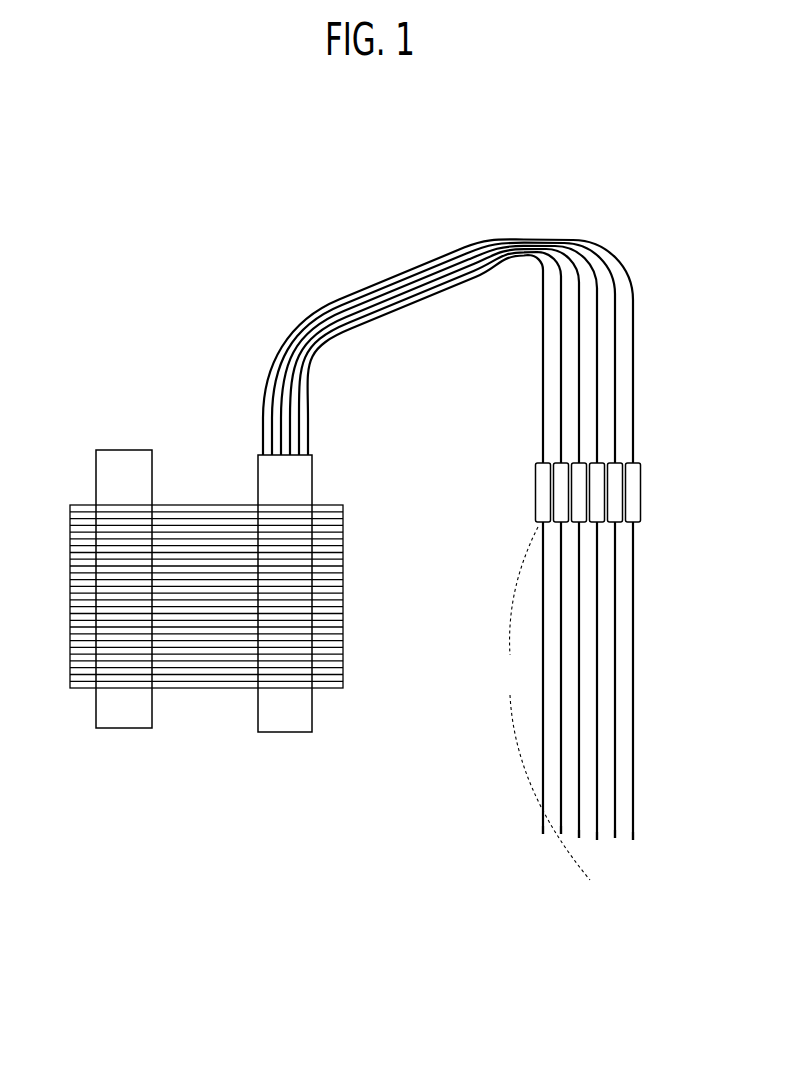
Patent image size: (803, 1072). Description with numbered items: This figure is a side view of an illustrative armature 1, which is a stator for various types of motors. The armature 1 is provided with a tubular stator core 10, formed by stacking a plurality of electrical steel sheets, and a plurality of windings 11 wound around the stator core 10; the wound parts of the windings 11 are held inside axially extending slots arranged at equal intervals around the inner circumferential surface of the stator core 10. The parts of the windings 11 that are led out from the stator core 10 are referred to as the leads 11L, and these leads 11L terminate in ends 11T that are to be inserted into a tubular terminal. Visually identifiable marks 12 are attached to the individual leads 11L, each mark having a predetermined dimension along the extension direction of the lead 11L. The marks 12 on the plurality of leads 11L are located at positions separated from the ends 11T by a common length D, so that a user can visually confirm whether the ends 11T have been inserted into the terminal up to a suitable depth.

The armature 1 is at (50, 328).
The stator core 10 is at (70, 588).
The windings 11 is at (152, 716).
The leads 11L is at (545, 355).
The ends 11T is at (543, 834).
The marks 12 is at (546, 485).
The common length D is at (548, 703).